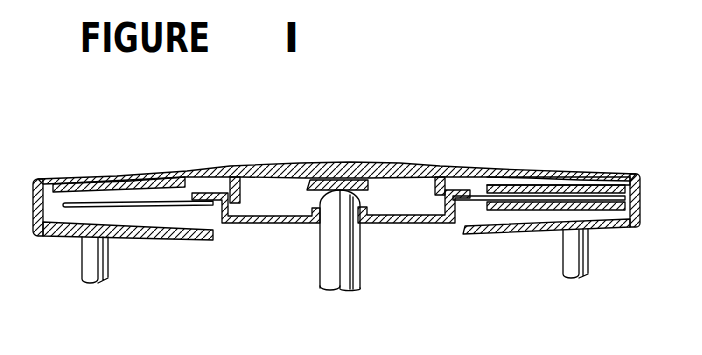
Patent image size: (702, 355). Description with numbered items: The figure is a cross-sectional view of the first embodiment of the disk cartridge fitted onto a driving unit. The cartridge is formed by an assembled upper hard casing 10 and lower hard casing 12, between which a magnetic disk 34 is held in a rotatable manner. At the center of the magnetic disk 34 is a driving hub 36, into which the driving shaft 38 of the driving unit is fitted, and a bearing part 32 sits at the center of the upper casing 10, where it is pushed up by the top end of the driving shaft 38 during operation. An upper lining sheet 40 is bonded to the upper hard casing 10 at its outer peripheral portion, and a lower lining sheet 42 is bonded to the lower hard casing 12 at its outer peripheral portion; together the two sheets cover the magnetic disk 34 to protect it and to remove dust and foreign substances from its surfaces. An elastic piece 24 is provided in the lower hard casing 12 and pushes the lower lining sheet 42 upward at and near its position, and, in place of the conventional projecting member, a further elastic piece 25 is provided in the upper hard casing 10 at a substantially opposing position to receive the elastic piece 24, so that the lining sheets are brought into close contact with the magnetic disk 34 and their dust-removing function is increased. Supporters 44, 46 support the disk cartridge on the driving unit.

The upper hard casing 10 is at (437, 176).
The lower hard casing 12 is at (502, 211).
The elastic piece 24 is at (541, 223).
The further elastic piece 25 is at (531, 178).
The bearing part 32 is at (342, 178).
The magnetic disk 34 is at (200, 206).
The driving hub 36 is at (386, 224).
The driving shaft 38 is at (335, 250).
The upper lining sheet 40 is at (117, 176).
The lower lining sheet 42 is at (140, 240).
The supporter 44 is at (97, 257).
The supporter 46 is at (590, 262).